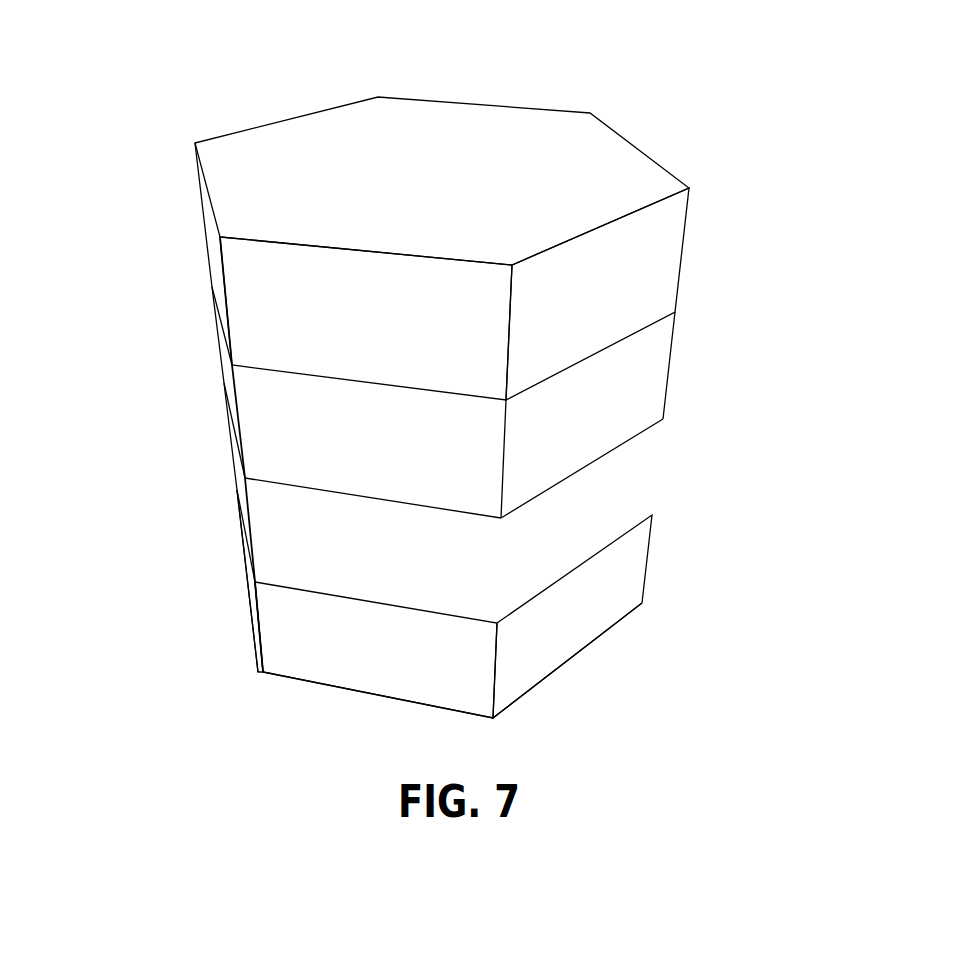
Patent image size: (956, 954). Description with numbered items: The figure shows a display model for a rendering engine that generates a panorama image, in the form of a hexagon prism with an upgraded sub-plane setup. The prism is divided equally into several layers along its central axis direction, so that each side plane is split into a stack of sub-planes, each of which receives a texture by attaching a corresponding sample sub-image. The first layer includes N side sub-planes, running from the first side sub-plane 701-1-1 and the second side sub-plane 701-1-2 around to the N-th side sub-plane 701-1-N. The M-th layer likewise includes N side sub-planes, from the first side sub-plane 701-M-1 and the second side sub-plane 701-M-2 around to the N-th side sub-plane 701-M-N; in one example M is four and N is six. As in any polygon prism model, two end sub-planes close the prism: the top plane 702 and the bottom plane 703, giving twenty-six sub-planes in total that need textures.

The top plane 702 is at (410, 130).
The bottom plane 703 is at (380, 695).
The first side sub-plane of the first layer 701-1-1 is at (366, 318).
The second side sub-plane of the first layer 701-1-2 is at (643, 260).
The N-th side sub-plane of the first layer 701-1-N is at (212, 260).
The first side sub-plane of the M-th layer 701-M-1 is at (376, 650).
The second side sub-plane of the M-th layer 701-M-2 is at (607, 580).
The N-th side sub-plane of the M-th layer 701-M-N is at (243, 562).